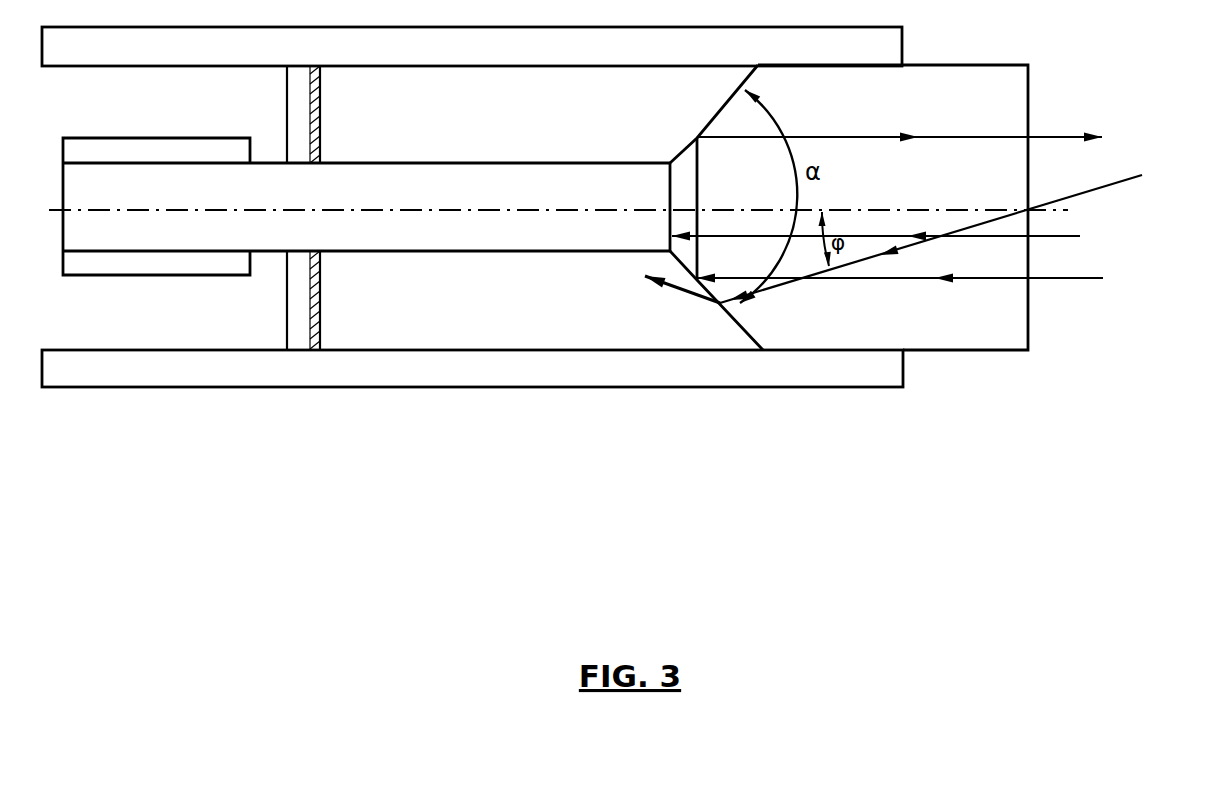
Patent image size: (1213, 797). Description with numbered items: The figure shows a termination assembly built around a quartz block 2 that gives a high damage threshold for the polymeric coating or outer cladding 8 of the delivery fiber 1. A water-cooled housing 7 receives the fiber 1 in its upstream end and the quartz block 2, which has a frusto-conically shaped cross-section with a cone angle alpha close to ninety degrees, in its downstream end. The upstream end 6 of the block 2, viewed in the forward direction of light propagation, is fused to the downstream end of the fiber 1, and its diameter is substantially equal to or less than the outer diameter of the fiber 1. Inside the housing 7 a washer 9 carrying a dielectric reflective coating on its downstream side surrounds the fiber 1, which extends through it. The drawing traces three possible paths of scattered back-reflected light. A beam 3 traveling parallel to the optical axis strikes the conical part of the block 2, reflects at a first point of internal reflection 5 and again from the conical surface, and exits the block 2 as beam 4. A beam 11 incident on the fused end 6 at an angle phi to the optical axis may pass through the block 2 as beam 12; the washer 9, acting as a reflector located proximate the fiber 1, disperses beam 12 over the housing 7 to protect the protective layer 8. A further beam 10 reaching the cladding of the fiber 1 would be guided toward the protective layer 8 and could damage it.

The delivery fiber 1 is at (457, 235).
The quartz block 2 is at (800, 328).
The back-reflected beam 3 is at (1073, 280).
The exiting beam 4 is at (1092, 137).
The point of internal reflection 5 is at (696, 280).
The upstream end of block 6 is at (670, 197).
The water-cooled housing 7 is at (850, 365).
The polymeric coating or outer cladding 8 is at (142, 258).
The washer 9 is at (293, 317).
The back-reflected beam 10 is at (988, 236).
The back-reflected beam 11 is at (862, 257).
The beam 12 is at (672, 285).